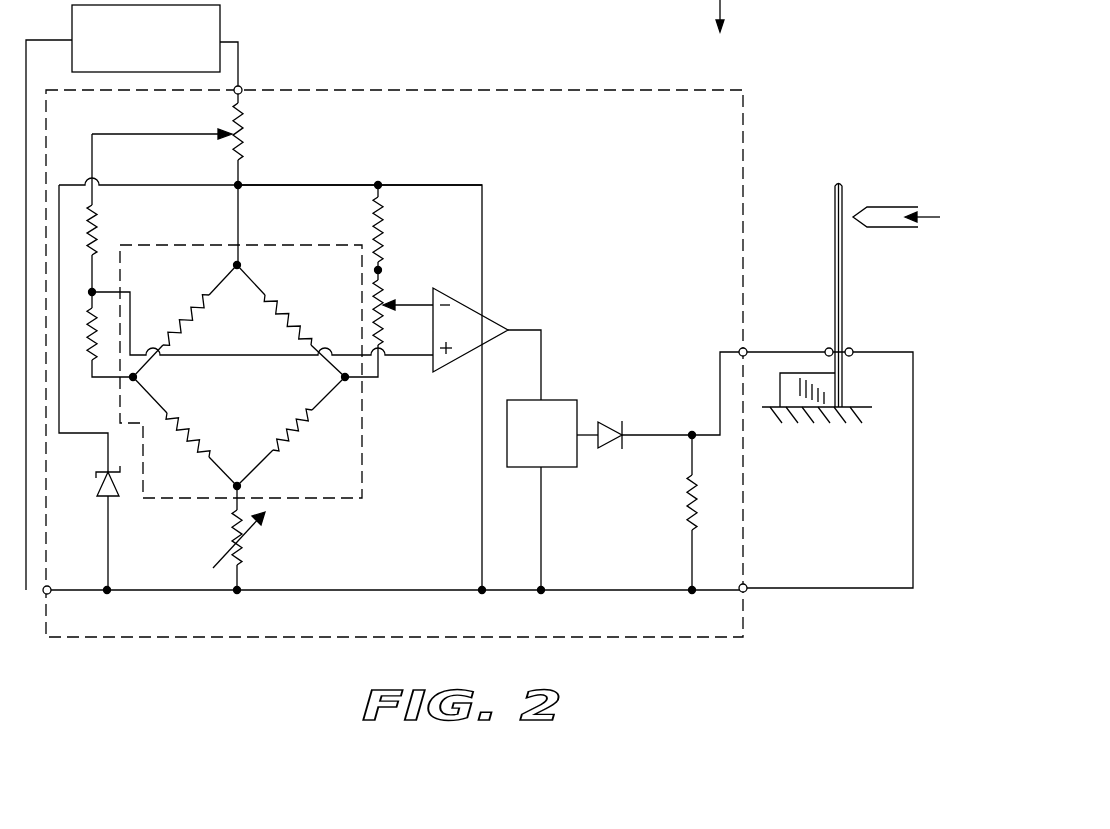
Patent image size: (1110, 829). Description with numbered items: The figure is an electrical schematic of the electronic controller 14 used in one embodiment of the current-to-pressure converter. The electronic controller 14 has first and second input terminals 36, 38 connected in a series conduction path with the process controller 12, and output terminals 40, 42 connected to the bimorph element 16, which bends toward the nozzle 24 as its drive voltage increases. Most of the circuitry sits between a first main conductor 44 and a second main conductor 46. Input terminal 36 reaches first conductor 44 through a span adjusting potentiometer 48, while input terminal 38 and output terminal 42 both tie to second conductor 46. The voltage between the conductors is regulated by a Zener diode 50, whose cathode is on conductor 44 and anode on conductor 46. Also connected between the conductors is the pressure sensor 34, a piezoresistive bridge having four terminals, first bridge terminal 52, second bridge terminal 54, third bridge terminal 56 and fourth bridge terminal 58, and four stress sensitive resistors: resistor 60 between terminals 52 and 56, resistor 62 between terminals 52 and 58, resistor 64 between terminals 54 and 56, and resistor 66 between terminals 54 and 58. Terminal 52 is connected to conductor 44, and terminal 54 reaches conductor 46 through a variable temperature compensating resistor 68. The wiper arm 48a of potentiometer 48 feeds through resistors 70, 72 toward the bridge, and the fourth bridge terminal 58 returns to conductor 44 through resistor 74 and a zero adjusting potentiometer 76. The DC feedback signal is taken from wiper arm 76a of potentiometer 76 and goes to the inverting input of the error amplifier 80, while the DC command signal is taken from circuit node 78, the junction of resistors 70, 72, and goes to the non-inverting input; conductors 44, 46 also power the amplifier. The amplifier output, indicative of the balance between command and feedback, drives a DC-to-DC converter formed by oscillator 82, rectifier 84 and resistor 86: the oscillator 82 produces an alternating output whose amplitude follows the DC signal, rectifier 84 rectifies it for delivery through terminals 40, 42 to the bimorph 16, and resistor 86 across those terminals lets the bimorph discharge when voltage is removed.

The process controller 12 is at (222, 14).
The electronic controller 14 is at (745, 147).
The bimorph element 16 is at (845, 278).
The nozzle 24 is at (888, 205).
The pressure sensor 34 is at (322, 245).
The first input terminal 36 is at (245, 86).
The second input terminal 38 is at (50, 598).
The output terminal 40 is at (740, 348).
The output terminal 42 is at (750, 593).
The first main conductor 44 is at (433, 185).
The second main conductor 46 is at (347, 594).
The span adjusting potentiometer 48 is at (244, 158).
The wiper arm 48a is at (168, 132).
The Zener diode 50 is at (100, 502).
The first bridge terminal 52 is at (240, 277).
The second bridge terminal 54 is at (232, 486).
The third bridge terminal 56 is at (140, 377).
The fourth bridge terminal 58 is at (350, 385).
The stress sensitive resistor 60 is at (178, 305).
The stress sensitive resistor 62 is at (300, 308).
The stress sensitive resistor 64 is at (190, 432).
The stress sensitive resistor 66 is at (297, 432).
The variable temperature compensating resistor 68 is at (245, 545).
The resistor 70 is at (100, 240).
The resistor 72 is at (90, 350).
The resistor 74 is at (385, 238).
The zero adjusting potentiometer 76 is at (376, 318).
The wiper arm 76a is at (420, 303).
The circuit node 78 is at (97, 291).
The error amplifier 80 is at (492, 318).
The oscillator 82 is at (558, 398).
The rectifier 84 is at (608, 428).
The resistor 86 is at (688, 512).